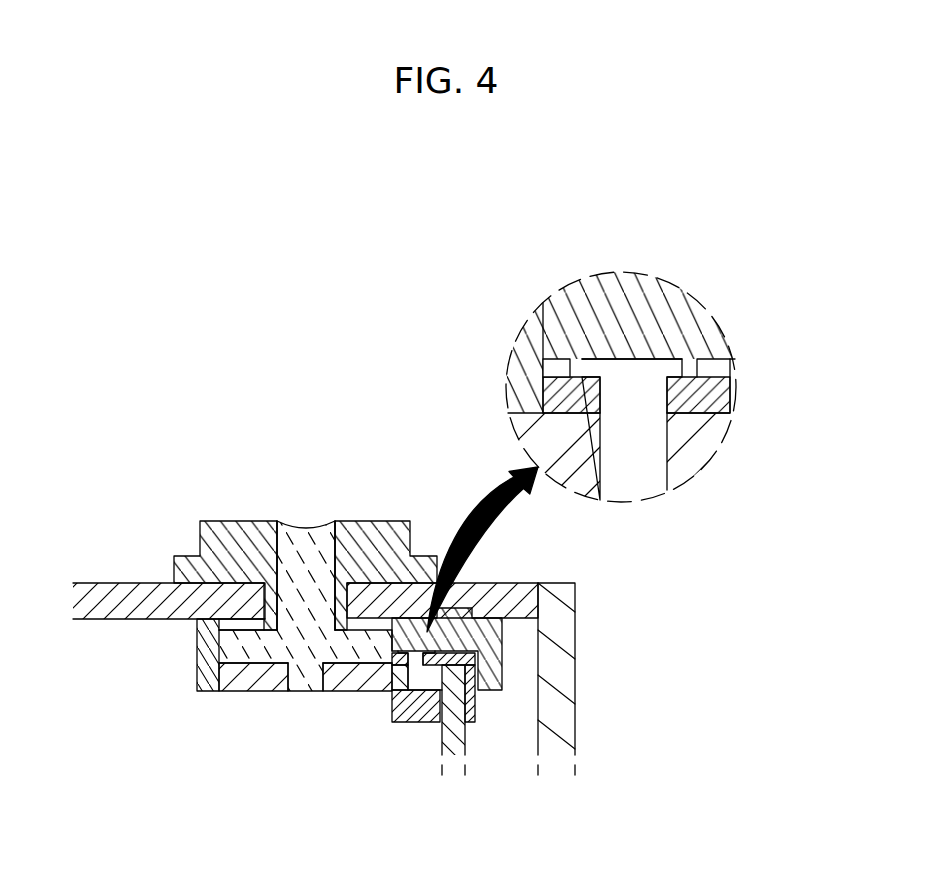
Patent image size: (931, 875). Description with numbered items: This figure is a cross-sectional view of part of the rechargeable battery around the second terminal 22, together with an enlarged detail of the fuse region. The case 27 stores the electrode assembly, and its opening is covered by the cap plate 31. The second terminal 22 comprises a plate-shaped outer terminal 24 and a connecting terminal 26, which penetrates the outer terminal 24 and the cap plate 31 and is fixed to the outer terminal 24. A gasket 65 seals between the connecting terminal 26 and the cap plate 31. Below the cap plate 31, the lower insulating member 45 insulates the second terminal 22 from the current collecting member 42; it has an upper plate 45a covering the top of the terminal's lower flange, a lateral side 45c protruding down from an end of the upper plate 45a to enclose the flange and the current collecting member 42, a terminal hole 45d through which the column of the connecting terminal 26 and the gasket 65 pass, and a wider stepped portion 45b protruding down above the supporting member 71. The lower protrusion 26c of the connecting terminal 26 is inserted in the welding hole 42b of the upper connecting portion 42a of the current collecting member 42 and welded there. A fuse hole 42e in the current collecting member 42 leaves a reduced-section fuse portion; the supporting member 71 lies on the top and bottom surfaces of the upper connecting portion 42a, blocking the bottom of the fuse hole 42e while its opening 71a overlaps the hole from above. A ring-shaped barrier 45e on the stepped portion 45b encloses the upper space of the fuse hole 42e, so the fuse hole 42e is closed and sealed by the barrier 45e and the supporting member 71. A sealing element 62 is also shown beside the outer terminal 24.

The second terminal 22 is at (363, 461).
The outer terminal 24 is at (357, 540).
The connecting terminal 26 is at (306, 540).
The lower protrusion 26c is at (306, 680).
The case 27 is at (562, 714).
The cap plate 31 is at (505, 594).
The current collecting member 42 is at (455, 742).
The upper connecting portion 42a is at (266, 676).
The welding hole 42b is at (297, 678).
The fuse hole 42e is at (410, 682).
The lower insulating member 45 is at (488, 648).
The upper plate 45a is at (232, 626).
The stepped portion 45b is at (663, 311).
The lateral side 45c is at (205, 677).
The terminal hole 45d is at (230, 622).
The barrier 45e is at (574, 368).
The seal ring 62 is at (420, 553).
The gasket 65 is at (265, 597).
The supporting member 71 is at (392, 703).
The opening 71a is at (601, 396).